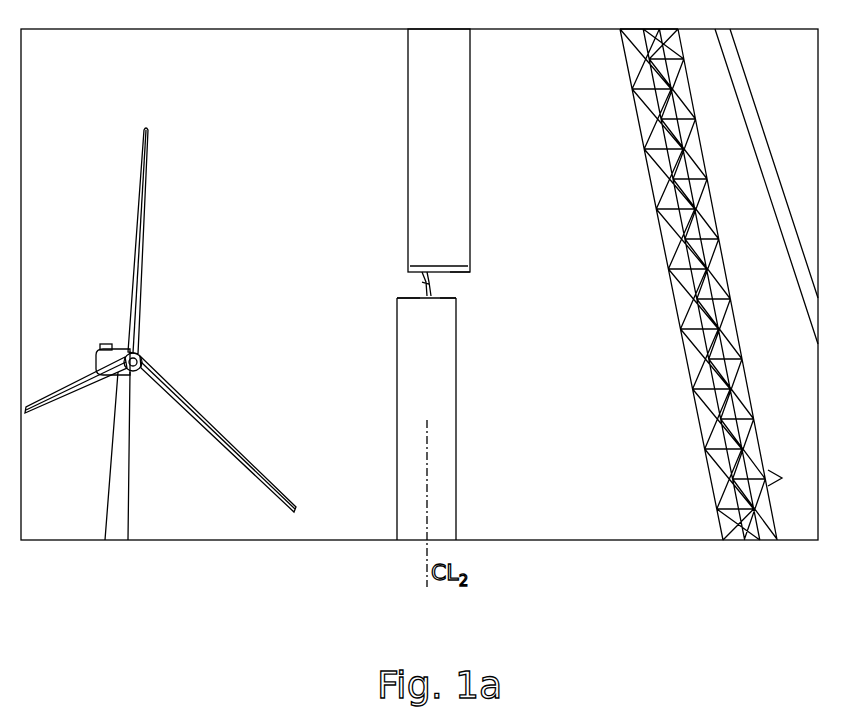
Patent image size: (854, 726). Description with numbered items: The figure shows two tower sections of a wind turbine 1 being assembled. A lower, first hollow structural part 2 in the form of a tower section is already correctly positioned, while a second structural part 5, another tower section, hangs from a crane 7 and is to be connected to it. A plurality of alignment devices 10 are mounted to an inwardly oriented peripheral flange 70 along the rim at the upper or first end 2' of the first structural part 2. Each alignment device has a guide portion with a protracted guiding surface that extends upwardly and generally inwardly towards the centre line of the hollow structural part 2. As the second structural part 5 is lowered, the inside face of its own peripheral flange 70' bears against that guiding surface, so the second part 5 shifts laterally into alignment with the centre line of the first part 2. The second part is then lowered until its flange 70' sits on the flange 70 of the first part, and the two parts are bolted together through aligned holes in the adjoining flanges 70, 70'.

The wind turbine 1 is at (165, 320).
The first hollow structural part 2 is at (390, 419).
The upper or first end 2' is at (483, 321).
The second structural part 5 is at (472, 145).
The crane 7 is at (633, 100).
The alignment devices 10 is at (430, 298).
The peripheral flange 70 is at (359, 292).
The peripheral flange 70' is at (504, 258).